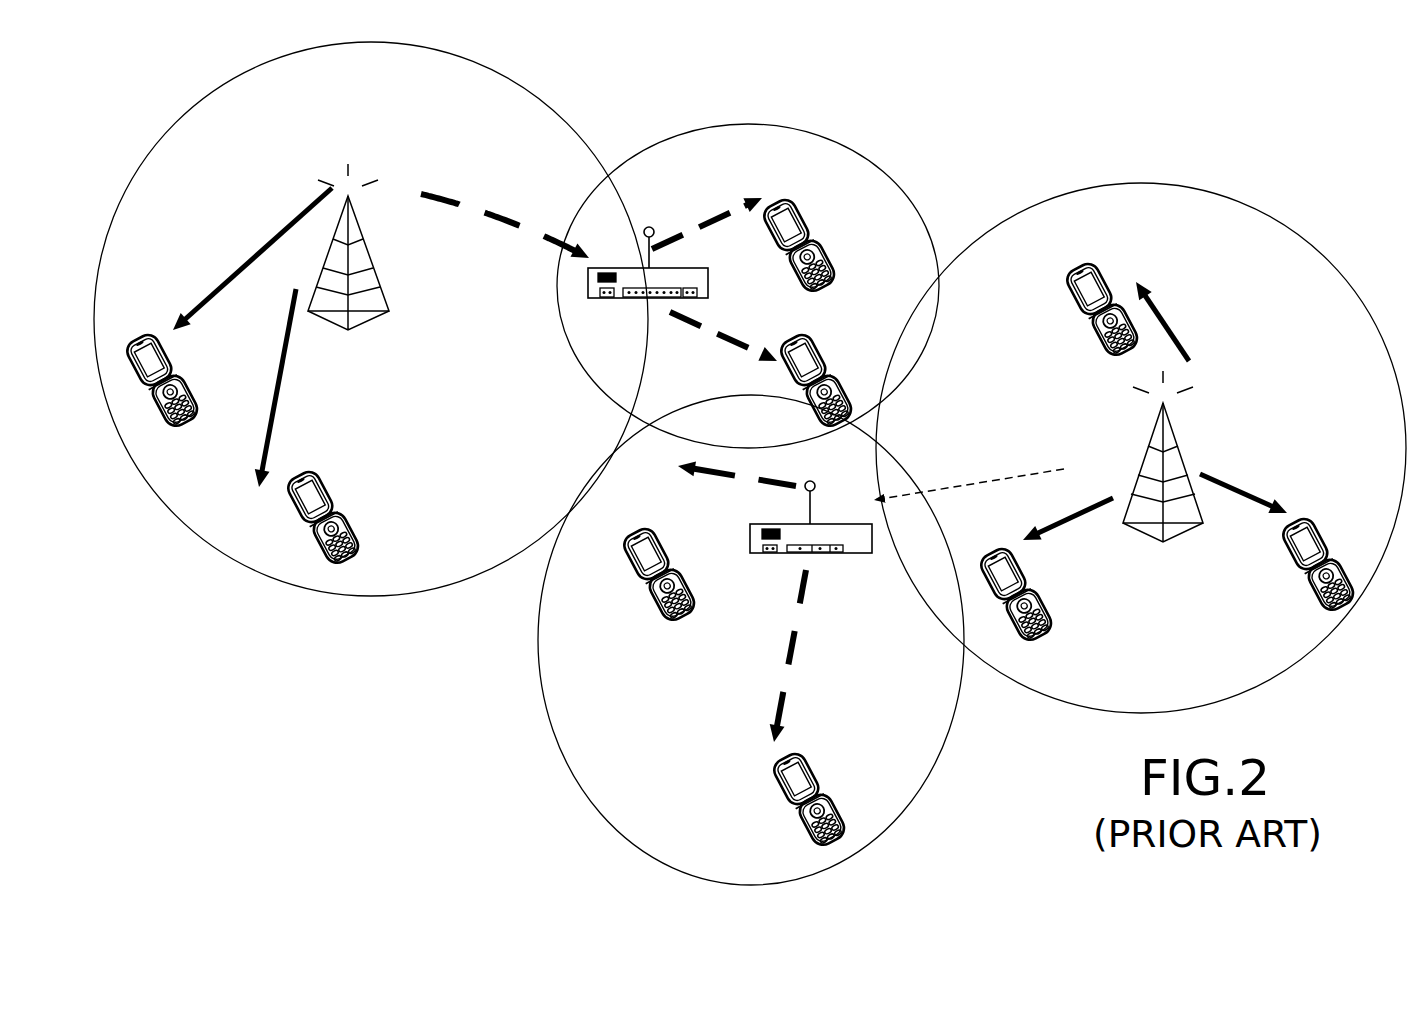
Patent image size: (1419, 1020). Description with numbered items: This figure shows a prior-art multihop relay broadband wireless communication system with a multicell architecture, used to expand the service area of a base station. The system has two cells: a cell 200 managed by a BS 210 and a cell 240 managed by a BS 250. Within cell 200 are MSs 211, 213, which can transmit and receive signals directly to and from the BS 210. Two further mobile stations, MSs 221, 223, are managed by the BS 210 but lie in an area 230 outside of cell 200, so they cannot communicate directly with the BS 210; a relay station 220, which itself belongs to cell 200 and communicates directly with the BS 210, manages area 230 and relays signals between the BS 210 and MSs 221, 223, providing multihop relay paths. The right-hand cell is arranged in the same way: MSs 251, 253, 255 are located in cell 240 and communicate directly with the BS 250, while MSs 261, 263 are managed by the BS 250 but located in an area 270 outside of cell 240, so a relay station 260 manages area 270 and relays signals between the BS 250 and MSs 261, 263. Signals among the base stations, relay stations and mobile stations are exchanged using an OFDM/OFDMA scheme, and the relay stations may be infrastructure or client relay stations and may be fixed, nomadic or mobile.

The cell 200 is at (371, 319).
The BS 210 is at (372, 250).
The MS 211 is at (146, 334).
The MS 213 is at (318, 478).
The relay station 220 is at (623, 299).
The MS 221 is at (806, 340).
The MS 223 is at (788, 204).
The area 230 is at (748, 286).
The cell 240 is at (1141, 448).
The BS 250 is at (1184, 459).
The MS 251 is at (1080, 262).
The MS 253 is at (1298, 520).
The MS 255 is at (996, 550).
The relay station 260 is at (760, 556).
The MS 261 is at (658, 530).
The MS 263 is at (806, 762).
The area 270 is at (751, 640).